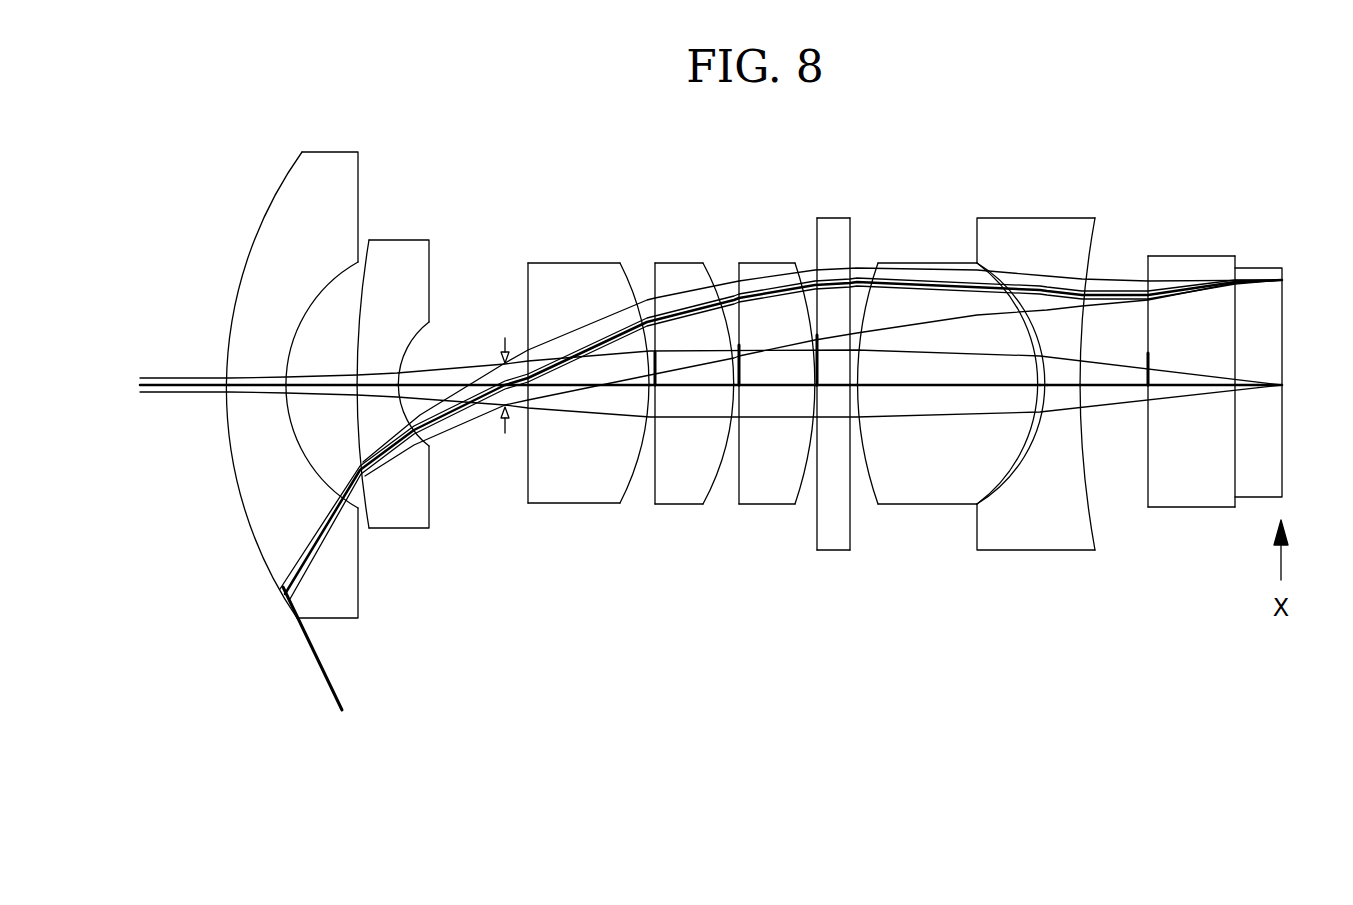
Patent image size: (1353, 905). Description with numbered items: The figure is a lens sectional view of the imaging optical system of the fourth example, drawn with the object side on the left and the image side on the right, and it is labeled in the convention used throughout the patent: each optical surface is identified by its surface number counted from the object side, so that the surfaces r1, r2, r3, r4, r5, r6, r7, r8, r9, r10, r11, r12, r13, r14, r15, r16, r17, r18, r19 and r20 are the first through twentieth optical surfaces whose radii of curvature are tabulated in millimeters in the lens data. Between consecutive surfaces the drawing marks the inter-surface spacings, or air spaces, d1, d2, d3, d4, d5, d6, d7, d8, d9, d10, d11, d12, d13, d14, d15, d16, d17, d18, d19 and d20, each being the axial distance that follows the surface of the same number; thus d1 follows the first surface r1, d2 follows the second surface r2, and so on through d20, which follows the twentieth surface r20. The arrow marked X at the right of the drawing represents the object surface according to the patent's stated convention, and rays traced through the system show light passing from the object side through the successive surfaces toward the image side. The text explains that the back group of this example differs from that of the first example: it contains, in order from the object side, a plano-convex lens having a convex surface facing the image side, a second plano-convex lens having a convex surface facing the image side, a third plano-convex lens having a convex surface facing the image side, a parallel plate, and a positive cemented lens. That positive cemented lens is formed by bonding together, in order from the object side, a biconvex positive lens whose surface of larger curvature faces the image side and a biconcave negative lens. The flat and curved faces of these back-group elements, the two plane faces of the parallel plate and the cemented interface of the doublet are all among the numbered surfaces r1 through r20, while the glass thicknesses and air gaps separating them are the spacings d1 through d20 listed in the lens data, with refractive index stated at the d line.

The optical surface r1 is at (238, 482).
The optical surface r2 is at (308, 435).
The optical surface r3 is at (362, 527).
The optical surface r4 is at (423, 407).
The optical surface r5 is at (505, 418).
The optical surface r6 is at (528, 480).
The optical surface r7 is at (630, 487).
The optical surface r8 is at (655, 497).
The optical surface r9 is at (712, 493).
The optical surface r10 is at (730, 487).
The optical surface r11 is at (802, 497).
The optical surface r12 is at (812, 540).
The optical surface r13 is at (850, 525).
The optical surface r14 is at (870, 493).
The optical surface r15 is at (1000, 495).
The optical surface r16 is at (1097, 500).
The optical surface r17 is at (1143, 406).
The optical surface r18 is at (1146, 497).
The optical surface r19 is at (1238, 487).
The optical surface r20 is at (1225, 453).
The inter-surface spacing d1 is at (260, 380).
The inter-surface spacing d2 is at (320, 382).
The inter-surface spacing d3 is at (380, 380).
The inter-surface spacing d4 is at (445, 380).
The inter-surface spacing d5 is at (520, 366).
The inter-surface spacing d6 is at (597, 380).
The inter-surface spacing d7 is at (650, 355).
The inter-surface spacing d8 is at (695, 388).
The inter-surface spacing d9 is at (737, 365).
The inter-surface spacing d10 is at (775, 388).
The inter-surface spacing d11 is at (815, 370).
The inter-surface spacing d12 is at (836, 380).
The inter-surface spacing d13 is at (860, 372).
The inter-surface spacing d14 is at (935, 388).
The inter-surface spacing d15 is at (1053, 383).
The inter-surface spacing d16 is at (1110, 392).
The inter-surface spacing d17 is at (1143, 388).
The inter-surface spacing d18 is at (1182, 380).
The inter-surface spacing d19 is at (1240, 374).
The inter-surface spacing d20 is at (1262, 382).